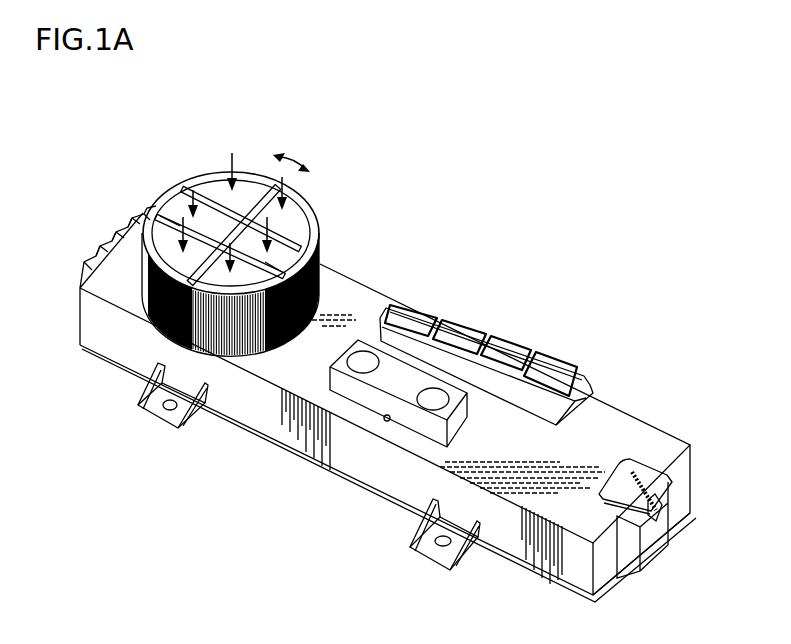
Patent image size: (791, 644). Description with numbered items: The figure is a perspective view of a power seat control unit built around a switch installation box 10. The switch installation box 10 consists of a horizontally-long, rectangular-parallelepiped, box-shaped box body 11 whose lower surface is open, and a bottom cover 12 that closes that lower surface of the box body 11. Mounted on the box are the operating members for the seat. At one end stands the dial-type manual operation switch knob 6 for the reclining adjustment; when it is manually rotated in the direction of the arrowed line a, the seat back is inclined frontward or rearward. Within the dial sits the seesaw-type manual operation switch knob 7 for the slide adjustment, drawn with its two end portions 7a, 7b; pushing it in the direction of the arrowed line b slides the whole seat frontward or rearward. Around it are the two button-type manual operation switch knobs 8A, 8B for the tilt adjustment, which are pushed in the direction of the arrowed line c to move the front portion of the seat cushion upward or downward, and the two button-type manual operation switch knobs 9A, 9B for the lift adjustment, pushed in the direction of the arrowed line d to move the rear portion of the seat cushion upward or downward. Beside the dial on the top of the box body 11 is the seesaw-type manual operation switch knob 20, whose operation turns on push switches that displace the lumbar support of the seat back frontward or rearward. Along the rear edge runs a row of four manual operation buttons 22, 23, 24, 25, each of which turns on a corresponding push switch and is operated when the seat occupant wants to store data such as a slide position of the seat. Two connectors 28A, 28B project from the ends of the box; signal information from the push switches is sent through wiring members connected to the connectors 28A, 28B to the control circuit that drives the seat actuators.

The dial-type manual operation switch knob 6 is at (180, 181).
The seesaw-type manual operation switch knob 7 is at (207, 214).
The key arm 7a is at (300, 251).
The key arm 7b is at (175, 209).
The button-type manual operation switch knob 8A is at (293, 215).
The button-type manual operation switch knob 8B is at (248, 275).
The button-type manual operation switch knob 9A is at (243, 190).
The button-type manual operation switch knob 9B is at (182, 270).
The switch installation box 10 is at (628, 385).
The box body 11 is at (647, 435).
The bottom cover 12 is at (523, 570).
The seesaw-type manual operation switch knob 20 is at (383, 383).
The manual operation button 22 is at (548, 378).
The manual operation button 23 is at (508, 355).
The manual operation button 24 is at (467, 333).
The manual operation button 25 is at (423, 312).
The connector 28A is at (85, 258).
The connector 28B is at (657, 535).
The arrowed line a is at (293, 163).
The arrowed line b is at (190, 198).
The arrowed line c is at (290, 185).
The arrowed line d is at (231, 155).